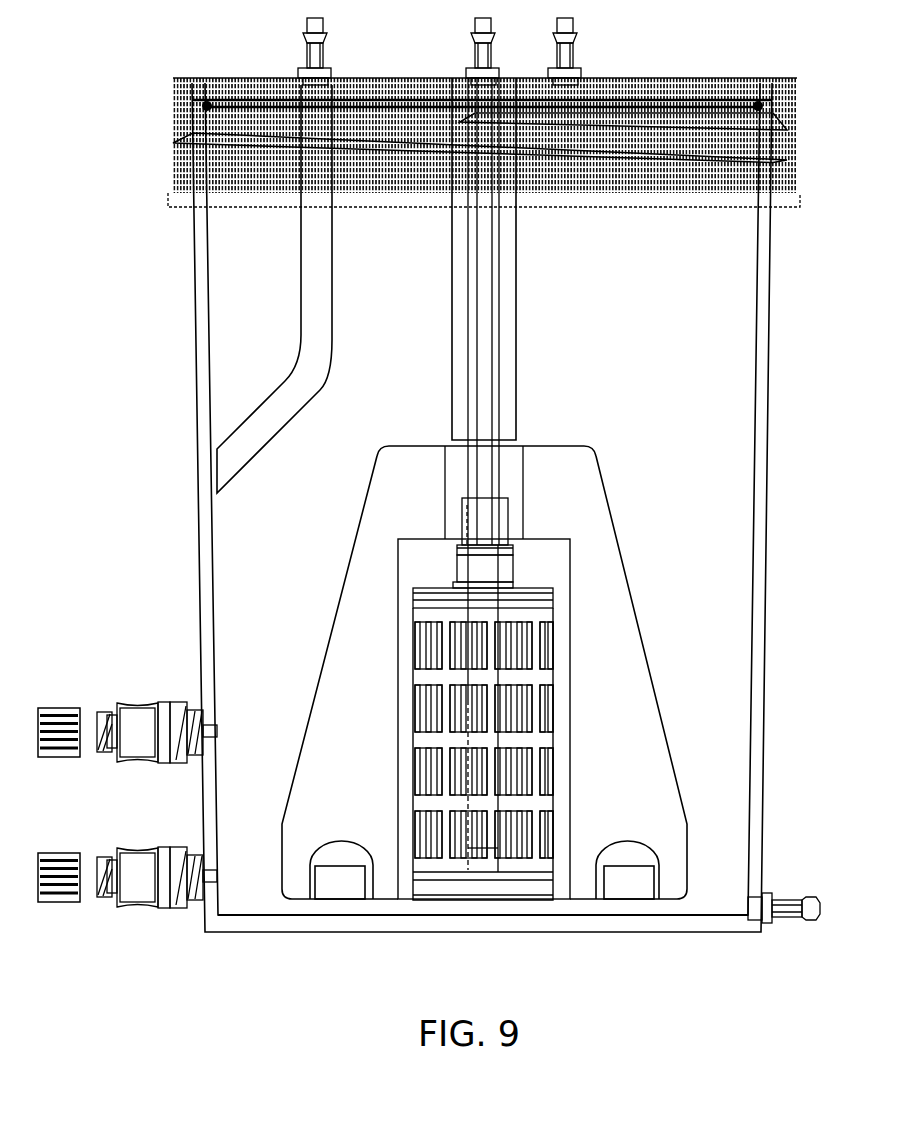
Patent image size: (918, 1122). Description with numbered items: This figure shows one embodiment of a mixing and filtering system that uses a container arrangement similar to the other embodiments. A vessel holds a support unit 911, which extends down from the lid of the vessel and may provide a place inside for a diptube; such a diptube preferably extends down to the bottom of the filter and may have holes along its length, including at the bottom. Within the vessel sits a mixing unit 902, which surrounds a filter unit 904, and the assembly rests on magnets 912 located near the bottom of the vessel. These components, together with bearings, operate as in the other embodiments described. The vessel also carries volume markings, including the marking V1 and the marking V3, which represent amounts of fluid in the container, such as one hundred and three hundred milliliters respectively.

The support unit 911 is at (502, 312).
The mixing unit 902 is at (604, 495).
The filter unit 904 is at (553, 737).
The volume marking V3 is at (748, 757).
The volume marking V1 is at (748, 852).
The magnet 912 is at (340, 892).